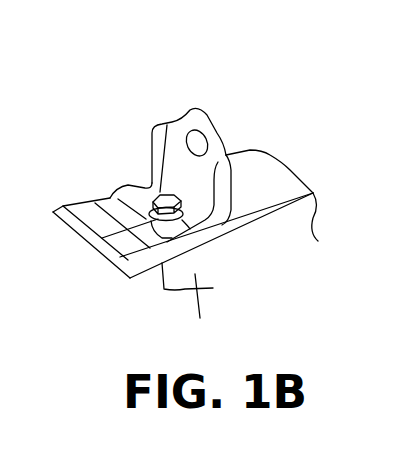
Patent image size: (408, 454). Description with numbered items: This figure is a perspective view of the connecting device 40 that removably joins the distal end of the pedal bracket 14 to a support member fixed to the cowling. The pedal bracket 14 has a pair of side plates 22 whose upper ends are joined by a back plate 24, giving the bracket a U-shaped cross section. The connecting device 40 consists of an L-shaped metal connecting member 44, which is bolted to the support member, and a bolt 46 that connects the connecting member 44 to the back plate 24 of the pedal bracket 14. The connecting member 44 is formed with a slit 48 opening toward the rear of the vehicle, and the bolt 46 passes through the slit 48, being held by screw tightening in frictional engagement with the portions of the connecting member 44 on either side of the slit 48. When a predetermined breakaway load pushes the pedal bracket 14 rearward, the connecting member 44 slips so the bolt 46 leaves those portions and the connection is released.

The pedal bracket 14 is at (160, 301).
The side plates 22 is at (198, 308).
The back plate 24 is at (270, 172).
The connecting device 40 is at (254, 95).
The connecting member 44 is at (175, 133).
The bolt 46 is at (157, 188).
The slit 48 is at (97, 247).